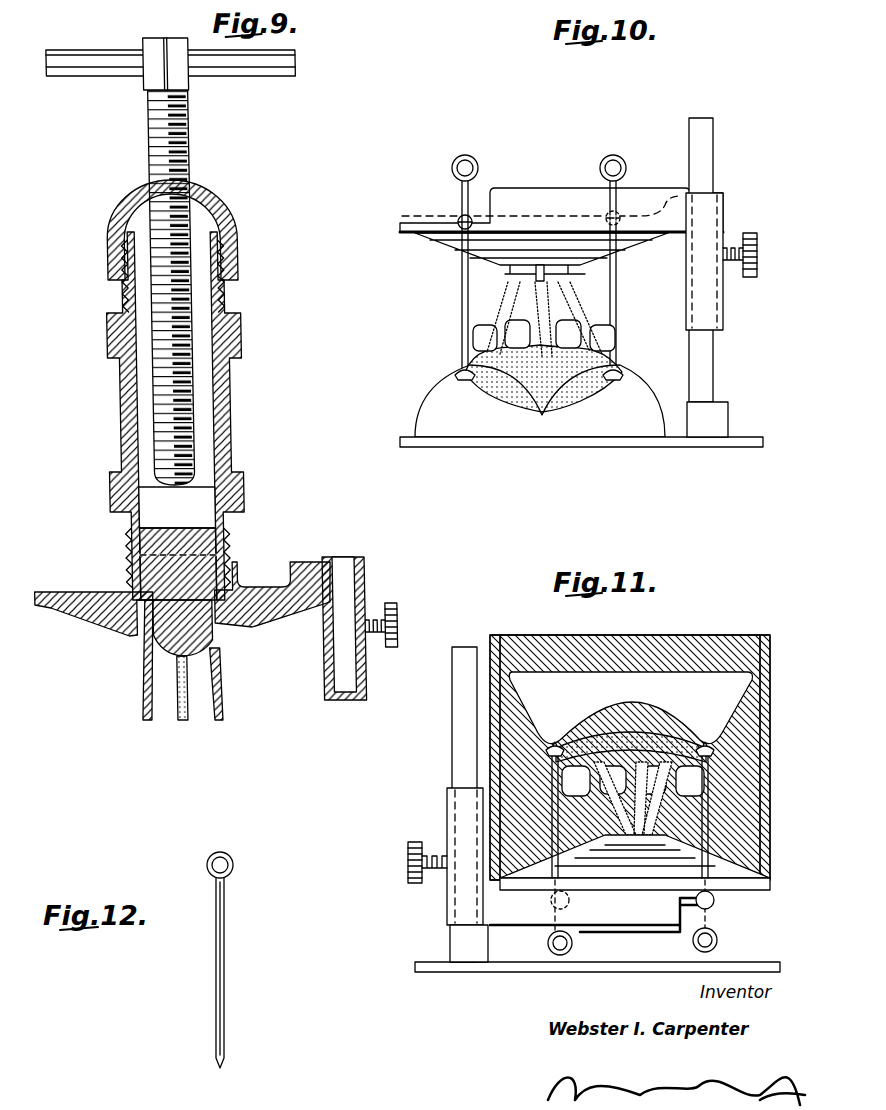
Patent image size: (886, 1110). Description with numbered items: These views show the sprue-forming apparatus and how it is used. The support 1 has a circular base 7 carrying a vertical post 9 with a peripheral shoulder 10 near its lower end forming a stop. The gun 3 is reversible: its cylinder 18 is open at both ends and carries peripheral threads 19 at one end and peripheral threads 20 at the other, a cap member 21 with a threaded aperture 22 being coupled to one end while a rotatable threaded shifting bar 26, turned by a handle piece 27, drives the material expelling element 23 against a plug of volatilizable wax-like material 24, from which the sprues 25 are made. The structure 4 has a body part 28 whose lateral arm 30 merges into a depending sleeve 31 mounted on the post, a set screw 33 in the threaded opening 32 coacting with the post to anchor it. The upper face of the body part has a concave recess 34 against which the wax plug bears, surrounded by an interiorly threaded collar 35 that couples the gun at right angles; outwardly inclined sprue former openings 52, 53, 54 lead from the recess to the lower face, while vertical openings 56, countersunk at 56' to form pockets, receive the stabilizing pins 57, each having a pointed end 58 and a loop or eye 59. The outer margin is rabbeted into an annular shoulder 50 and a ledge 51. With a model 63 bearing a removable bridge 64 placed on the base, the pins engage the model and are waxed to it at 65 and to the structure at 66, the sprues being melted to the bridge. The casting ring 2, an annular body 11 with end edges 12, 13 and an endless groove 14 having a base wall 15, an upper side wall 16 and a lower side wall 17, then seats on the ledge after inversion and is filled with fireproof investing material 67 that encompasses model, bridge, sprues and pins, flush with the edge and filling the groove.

In FIG. 11, the support 1 is at (433, 990).
In FIG. 11, the casting ring 2 is at (776, 741).
In FIG. 9, the gun 3 is at (235, 410).
In FIG. 9, the structure 4 is at (272, 574).
In FIG. 10, the structure 4 is at (430, 214).
In FIG. 10, the circular base 7 is at (639, 448).
In FIG. 11, the circular base 7 is at (540, 974).
In FIG. 10, the post 9 is at (714, 356).
In FIG. 11, the post 9 is at (452, 757).
In FIG. 10, the peripheral shoulder 10 is at (722, 402).
In FIG. 11, the peripheral shoulder 10 is at (455, 940).
In FIG. 11, the annular body 11 is at (496, 728).
In FIG. 11, the end edge 12 is at (505, 892).
In FIG. 11, the end edge 13 is at (495, 635).
In FIG. 11, the endless groove 14 is at (510, 650).
In FIG. 11, the inner or base wall 15 is at (492, 684).
In FIG. 11, the upper side wall 16 is at (494, 703).
In FIG. 11, the lower side wall 17 is at (488, 648).
In FIG. 9, the cylinder 18 is at (226, 376).
In FIG. 9, the peripheral threads 19 is at (221, 300).
In FIG. 9, the peripheral threads 20 is at (216, 534).
In FIG. 9, the cap member 21 is at (234, 215).
In FIG. 9, the aperture 22 is at (193, 180).
In FIG. 9, the material expelling element 23 is at (142, 498).
In FIG. 9, the volatilizable wax-like material 24 is at (152, 540).
In FIG. 9, the sprues 25 is at (211, 678).
In FIG. 10, the sprues 25 is at (570, 300).
In FIG. 11, the sprues 25 is at (650, 760).
In FIG. 9, the shifting bar 26 is at (186, 147).
In FIG. 9, the handle piece 27 is at (262, 78).
In FIG. 9, the body part 28 is at (72, 590).
In FIG. 9, the lateral arm 30 is at (302, 610).
In FIG. 9, the sleeve 31 is at (356, 575).
In FIG. 10, the sleeve 31 is at (718, 293).
In FIG. 11, the sleeve 31 is at (460, 892).
In FIG. 11, the opening 32 is at (428, 875).
In FIG. 9, the set screw 33 is at (387, 606).
In FIG. 10, the set screw 33 is at (755, 238).
In FIG. 11, the set screw 33 is at (406, 852).
In FIG. 9, the concave recess 34 is at (134, 656).
In FIG. 9, the collar 35 is at (219, 562).
In FIG. 9, the annular shoulder 50 is at (56, 624).
In FIG. 9, the ledge 51 is at (26, 606).
In FIG. 9, the sprue former opening 52 is at (96, 628).
In FIG. 9, the sprue former opening 53 is at (123, 640).
In FIG. 9, the sprue former opening 54 is at (218, 615).
In FIG. 9, the vertical openings 56 is at (291, 637).
In FIG. 9, the countersunk portion 56' is at (174, 551).
In FIG. 10, the stabilizing pin 57 is at (468, 195).
In FIG. 11, the stabilizing pin 57 is at (548, 782).
In FIG. 12, the stabilizing pin 57 is at (216, 962).
In FIG. 12, the pointed end 58 is at (215, 1062).
In FIG. 12, the loop or eye 59 is at (208, 858).
In FIG. 10, the model 63 is at (632, 385).
In FIG. 11, the model 63 is at (600, 672).
In FIG. 10, the removable bridge 64 is at (540, 380).
In FIG. 11, the removable bridge 64 is at (592, 740).
In FIG. 10, the wax 65 is at (622, 372).
In FIG. 11, the wax 65 is at (552, 752).
In FIG. 10, the wax 66 is at (458, 218).
In FIG. 11, the wax 66 is at (568, 903).
In FIG. 11, the investing material 67 is at (678, 645).